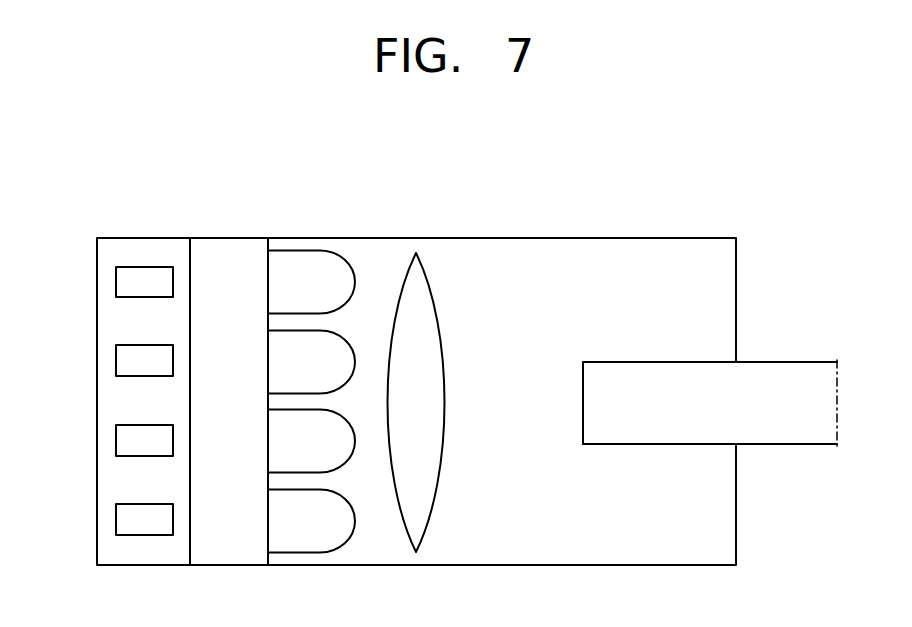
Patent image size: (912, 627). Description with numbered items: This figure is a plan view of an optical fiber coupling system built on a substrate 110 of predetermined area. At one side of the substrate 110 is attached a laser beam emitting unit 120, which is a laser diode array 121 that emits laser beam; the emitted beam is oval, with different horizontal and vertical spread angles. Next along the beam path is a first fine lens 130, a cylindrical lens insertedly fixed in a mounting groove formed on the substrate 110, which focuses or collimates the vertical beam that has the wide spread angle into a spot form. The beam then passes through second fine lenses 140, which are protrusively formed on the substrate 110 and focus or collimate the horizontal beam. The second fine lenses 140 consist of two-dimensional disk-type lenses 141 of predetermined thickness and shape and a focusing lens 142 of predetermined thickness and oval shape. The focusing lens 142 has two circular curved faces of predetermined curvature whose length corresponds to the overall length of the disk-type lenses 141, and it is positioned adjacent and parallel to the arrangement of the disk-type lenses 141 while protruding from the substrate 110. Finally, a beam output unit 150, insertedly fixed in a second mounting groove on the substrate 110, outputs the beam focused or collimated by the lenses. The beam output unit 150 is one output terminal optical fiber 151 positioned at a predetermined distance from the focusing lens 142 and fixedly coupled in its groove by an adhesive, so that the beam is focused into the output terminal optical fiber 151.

The substrate 110 is at (642, 231).
The laser beam emitting unit 120 is at (147, 262).
The laser diode array 121 is at (118, 288).
The first fine lens 130 is at (240, 245).
The second fine lenses 140 is at (450, 160).
The disk-type lenses 141 is at (340, 513).
The focusing lens 142 is at (427, 328).
The beam output unit 150 is at (793, 348).
The output terminal optical fiber 151 is at (810, 433).